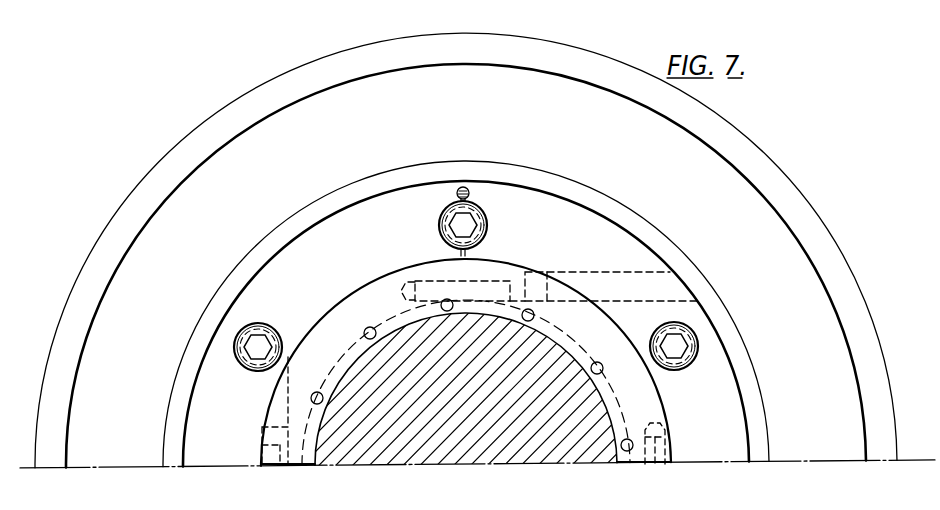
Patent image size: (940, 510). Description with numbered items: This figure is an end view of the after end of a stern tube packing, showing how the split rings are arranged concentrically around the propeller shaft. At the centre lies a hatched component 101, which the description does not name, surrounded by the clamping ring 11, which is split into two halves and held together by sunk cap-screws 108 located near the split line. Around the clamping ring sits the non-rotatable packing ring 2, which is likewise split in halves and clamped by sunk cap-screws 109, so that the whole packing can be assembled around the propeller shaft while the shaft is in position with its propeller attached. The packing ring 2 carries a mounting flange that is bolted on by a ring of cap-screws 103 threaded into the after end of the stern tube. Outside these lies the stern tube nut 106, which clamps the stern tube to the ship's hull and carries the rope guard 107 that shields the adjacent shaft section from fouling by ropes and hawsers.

The non-rotatable packing ring 2 is at (716, 440).
The clamping ring 11 is at (632, 387).
The shaft (hatched section) 101 is at (442, 440).
The cap-screws 103 is at (441, 228).
The stern tube nut 106 is at (832, 365).
The rope guard 107 is at (817, 242).
The sunk cap-screws 108 is at (279, 447).
The sunk cap-screws 109 is at (468, 287).